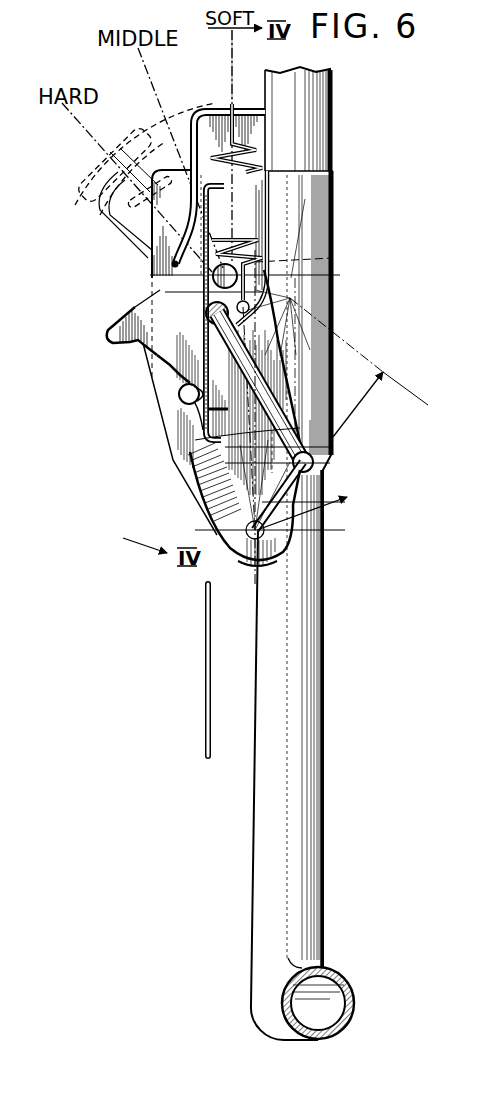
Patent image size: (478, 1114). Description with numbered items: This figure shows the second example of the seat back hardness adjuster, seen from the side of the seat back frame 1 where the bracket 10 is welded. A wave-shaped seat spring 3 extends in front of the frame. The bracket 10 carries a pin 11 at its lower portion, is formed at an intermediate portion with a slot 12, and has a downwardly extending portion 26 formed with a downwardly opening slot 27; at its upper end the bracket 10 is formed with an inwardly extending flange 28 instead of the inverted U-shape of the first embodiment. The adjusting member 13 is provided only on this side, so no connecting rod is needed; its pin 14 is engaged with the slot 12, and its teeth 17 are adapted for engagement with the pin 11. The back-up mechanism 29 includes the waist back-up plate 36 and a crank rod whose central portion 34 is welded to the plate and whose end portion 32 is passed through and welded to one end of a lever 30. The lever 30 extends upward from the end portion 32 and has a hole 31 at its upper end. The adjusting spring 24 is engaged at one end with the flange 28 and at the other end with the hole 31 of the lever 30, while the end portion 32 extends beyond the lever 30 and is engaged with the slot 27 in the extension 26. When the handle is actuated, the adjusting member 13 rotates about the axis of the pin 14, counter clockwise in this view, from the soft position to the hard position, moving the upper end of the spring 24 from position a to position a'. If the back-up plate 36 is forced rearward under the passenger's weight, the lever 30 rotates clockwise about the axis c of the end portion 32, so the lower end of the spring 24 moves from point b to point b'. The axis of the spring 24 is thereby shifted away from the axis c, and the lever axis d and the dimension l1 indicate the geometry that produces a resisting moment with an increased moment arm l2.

The seat back frame 1 is at (312, 742).
The seat spring 3 is at (207, 672).
The bracket 10 is at (158, 380).
The pin 11 is at (180, 397).
The slot 12 is at (334, 252).
The adjusting member 13 is at (160, 312).
The pin 14 is at (212, 280).
The teeth 17 is at (142, 345).
The adjusting spring 24 is at (255, 153).
The downwardly extending portion 26 is at (202, 488).
The slot 27 is at (253, 565).
The flange 28 is at (210, 127).
The back-up mechanism 29 is at (290, 560).
The lever 30 is at (235, 468).
The hole 31 is at (275, 285).
The end portion 32 is at (246, 555).
The central portion 34 is at (230, 318).
The waist back-up plate 36 is at (172, 266).
The position a is at (246, 65).
The position a' is at (115, 191).
The point b is at (309, 284).
The point b' is at (315, 410).
The axis c is at (250, 528).
The lever axis d is at (262, 358).
The lever length 1 l1 is at (271, 517).
The moment arm l2 is at (358, 406).